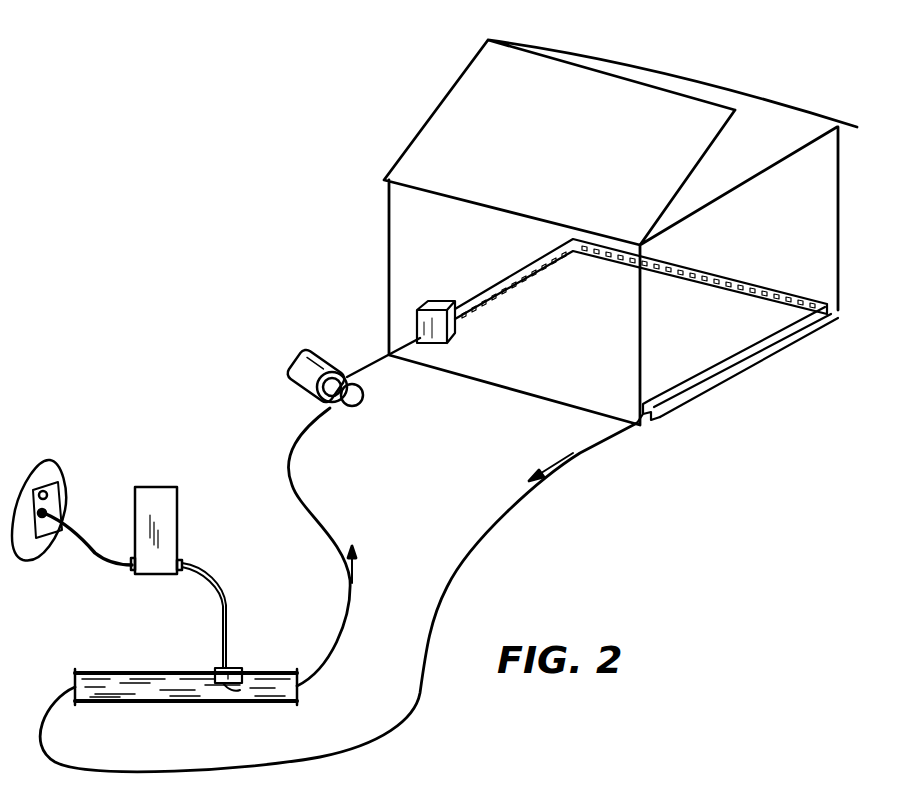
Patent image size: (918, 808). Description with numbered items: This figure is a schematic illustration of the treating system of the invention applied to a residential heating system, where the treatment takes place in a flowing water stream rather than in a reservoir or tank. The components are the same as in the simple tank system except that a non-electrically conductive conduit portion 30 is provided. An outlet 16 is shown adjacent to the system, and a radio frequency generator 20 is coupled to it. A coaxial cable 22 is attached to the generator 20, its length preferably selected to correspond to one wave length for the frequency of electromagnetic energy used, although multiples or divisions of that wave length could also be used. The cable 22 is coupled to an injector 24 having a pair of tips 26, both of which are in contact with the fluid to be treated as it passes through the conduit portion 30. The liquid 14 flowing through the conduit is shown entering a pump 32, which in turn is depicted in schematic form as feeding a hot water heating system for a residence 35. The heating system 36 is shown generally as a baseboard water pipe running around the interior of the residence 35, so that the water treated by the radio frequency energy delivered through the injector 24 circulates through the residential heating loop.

The aqueous fluid 14 is at (140, 687).
The outlet 16 is at (65, 478).
The radio frequency generator 20 is at (168, 486).
The coaxial cable 22 is at (217, 580).
The injector 24 is at (240, 670).
The tips 26 is at (225, 684).
The non-electrically conductive conduit portion 30 is at (312, 415).
The pump 32 is at (362, 398).
The residence 35 is at (457, 93).
The heating system 36 is at (510, 270).